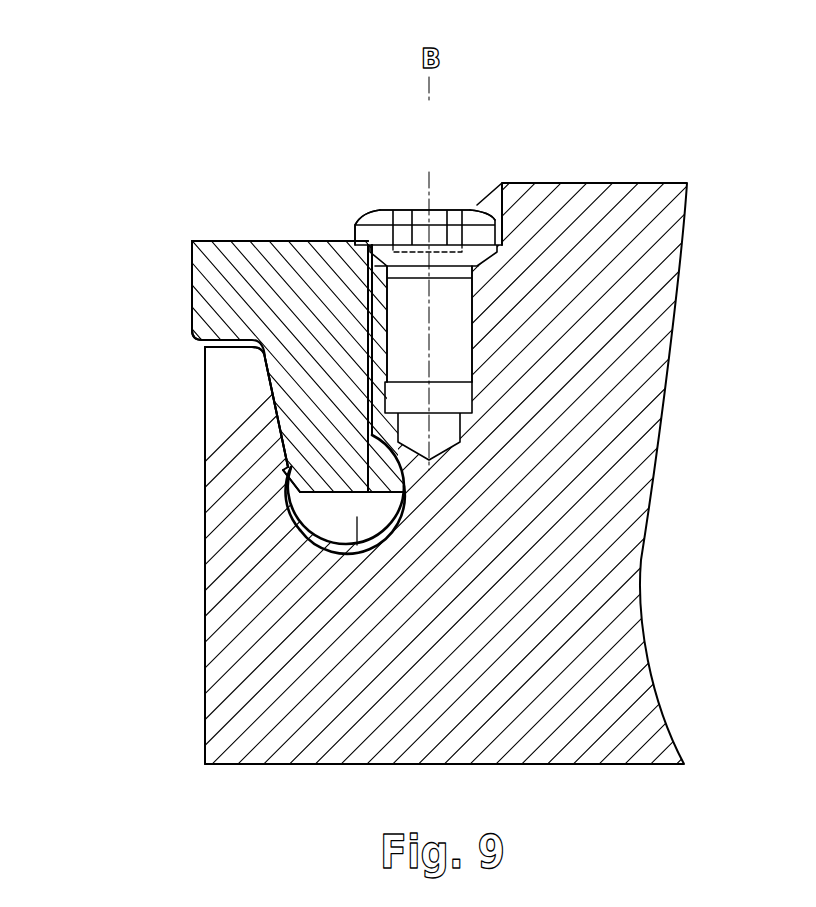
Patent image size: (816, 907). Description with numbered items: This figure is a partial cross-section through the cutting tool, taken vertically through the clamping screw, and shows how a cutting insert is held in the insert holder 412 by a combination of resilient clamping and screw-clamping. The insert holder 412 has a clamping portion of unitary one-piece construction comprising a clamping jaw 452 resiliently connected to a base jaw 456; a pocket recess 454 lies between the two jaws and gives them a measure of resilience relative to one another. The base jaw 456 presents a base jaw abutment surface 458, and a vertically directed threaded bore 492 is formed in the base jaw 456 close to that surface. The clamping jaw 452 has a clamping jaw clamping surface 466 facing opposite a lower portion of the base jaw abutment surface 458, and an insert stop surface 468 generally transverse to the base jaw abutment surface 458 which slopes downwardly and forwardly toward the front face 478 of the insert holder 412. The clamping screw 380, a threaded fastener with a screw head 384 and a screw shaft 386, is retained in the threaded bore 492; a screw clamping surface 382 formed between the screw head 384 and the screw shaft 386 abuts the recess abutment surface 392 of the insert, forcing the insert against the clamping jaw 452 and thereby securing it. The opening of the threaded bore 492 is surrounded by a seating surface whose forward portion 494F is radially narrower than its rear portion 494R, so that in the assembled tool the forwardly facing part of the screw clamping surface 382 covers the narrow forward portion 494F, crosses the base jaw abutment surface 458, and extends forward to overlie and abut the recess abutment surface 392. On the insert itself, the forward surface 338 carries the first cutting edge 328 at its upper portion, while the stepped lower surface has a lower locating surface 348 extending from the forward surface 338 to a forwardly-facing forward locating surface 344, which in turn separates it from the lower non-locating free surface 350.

The insert holder 412 is at (545, 712).
The forward surface 338 is at (183, 275).
The clamping screw 380 is at (499, 281).
The screw head 384 is at (430, 210).
The recess abutment surface 392 is at (360, 224).
The forward portion of the seating surface 494F is at (470, 207).
The rear portion of the seating surface 494R is at (478, 208).
The screw shaft 386 is at (440, 328).
The threaded bore 492 is at (437, 410).
The base jaw abutment surface 458 is at (220, 241).
The screw clamping surface 382 is at (337, 241).
The base jaw 456 is at (364, 352).
The first cutting edge 328 is at (197, 241).
The insert stop surface 468 is at (232, 338).
The lower locating surface 348 is at (206, 366).
The front face 478 is at (240, 393).
The clamping jaw 452 is at (278, 417).
The forward locating surface 344 is at (283, 470).
The clamping jaw clamping surface 466 is at (300, 489).
The non-locating free surface 350 is at (352, 543).
The pocket recess 454 is at (350, 562).